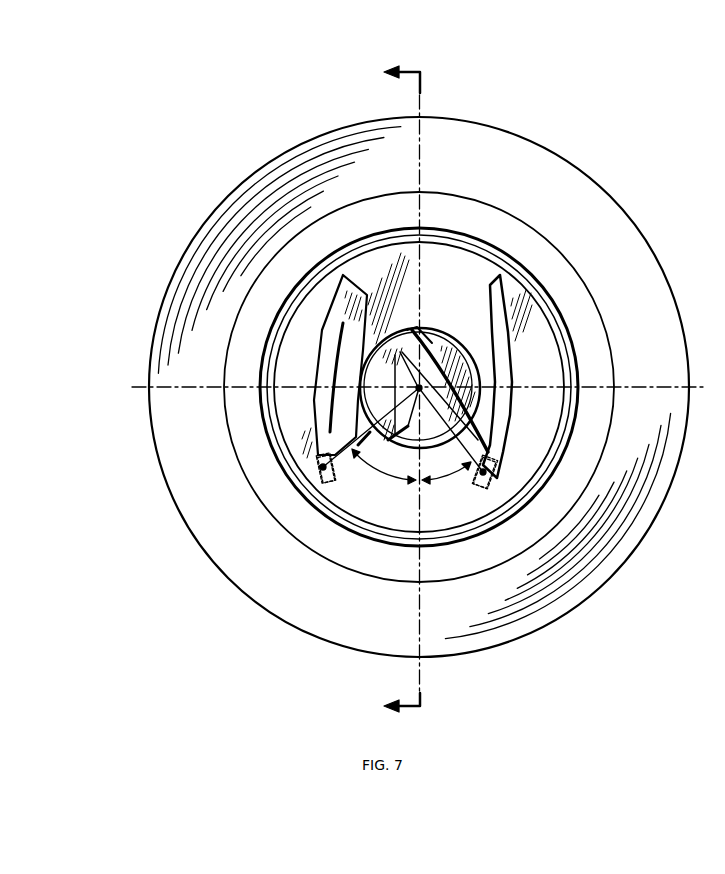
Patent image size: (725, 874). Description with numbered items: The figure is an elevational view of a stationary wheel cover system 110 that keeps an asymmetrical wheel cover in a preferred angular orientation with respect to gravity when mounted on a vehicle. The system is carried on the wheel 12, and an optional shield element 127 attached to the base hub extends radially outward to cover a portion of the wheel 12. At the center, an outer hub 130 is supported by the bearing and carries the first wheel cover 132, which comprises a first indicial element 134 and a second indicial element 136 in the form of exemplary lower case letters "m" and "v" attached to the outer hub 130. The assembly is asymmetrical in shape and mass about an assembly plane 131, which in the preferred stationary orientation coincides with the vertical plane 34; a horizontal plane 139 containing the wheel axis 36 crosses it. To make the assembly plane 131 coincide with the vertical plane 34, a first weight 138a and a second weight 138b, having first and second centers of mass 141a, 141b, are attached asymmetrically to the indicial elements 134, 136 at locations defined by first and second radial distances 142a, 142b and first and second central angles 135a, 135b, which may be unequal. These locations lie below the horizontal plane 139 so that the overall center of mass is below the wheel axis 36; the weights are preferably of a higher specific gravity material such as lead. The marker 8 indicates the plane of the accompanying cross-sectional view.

The section line 8- 8 is at (396, 395).
The wheel 12 is at (614, 352).
The vertical plane 34 is at (416, 661).
The wheel axis 36 is at (428, 333).
The wheel cover system 110 is at (528, 208).
The shield element 127 is at (530, 272).
The outer hub 130 is at (440, 352).
The assembly plane 131 is at (422, 112).
The first wheel cover 132 is at (540, 329).
The first indicial element 134 is at (317, 407).
The first central angle 135a is at (358, 462).
The second central angle 135b is at (453, 476).
The second indicial element 136 is at (505, 375).
The first weight 138a is at (336, 480).
The second weight 138b is at (478, 490).
The horizontal plane 139 is at (146, 386).
The first center of mass 141a is at (322, 468).
The second center of mass 141b is at (483, 472).
The first radial distance 142a is at (312, 433).
The second radial distance 142b is at (490, 455).